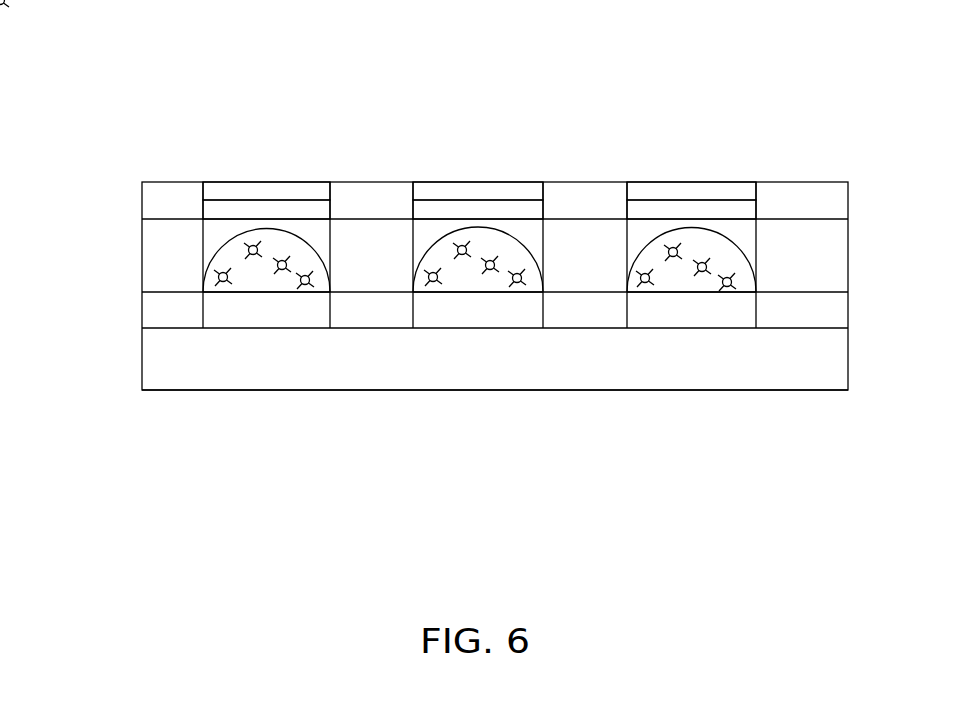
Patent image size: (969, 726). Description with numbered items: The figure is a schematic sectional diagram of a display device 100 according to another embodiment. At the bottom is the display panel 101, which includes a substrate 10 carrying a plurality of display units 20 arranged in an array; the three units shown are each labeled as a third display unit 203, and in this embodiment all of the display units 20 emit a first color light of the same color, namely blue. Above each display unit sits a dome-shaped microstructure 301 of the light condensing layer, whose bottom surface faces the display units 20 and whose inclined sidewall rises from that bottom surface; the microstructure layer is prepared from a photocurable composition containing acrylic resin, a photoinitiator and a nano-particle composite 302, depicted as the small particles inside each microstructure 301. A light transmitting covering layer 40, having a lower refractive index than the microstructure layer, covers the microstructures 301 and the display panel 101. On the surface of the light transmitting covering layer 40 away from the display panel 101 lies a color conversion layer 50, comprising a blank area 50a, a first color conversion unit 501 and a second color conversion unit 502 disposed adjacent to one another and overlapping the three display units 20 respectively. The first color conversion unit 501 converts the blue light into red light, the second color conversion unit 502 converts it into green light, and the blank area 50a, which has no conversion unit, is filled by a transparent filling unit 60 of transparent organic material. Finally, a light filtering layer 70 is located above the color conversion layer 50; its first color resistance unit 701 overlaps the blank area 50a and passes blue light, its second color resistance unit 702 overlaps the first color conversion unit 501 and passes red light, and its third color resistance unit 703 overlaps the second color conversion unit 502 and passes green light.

The display device 100 is at (496, 91).
The substrate 10 is at (162, 363).
The display panel 101 is at (134, 305).
The display units 20 is at (696, 445).
The third display unit 203 is at (259, 321).
The microstructure 301 is at (222, 258).
The nano-particle composite 302 is at (247, 253).
The light transmitting covering layer 40 is at (816, 253).
The color conversion layer 50 is at (517, 513).
The blank area 50a is at (328, 210).
The first color conversion unit 501 is at (438, 204).
The second color conversion unit 502 is at (646, 204).
The transparent filling unit 60 is at (217, 201).
The light filtering layer 70 is at (407, 513).
The first color resistance unit 701 is at (268, 194).
The second color resistance unit 702 is at (502, 194).
The third color resistance unit 703 is at (717, 194).